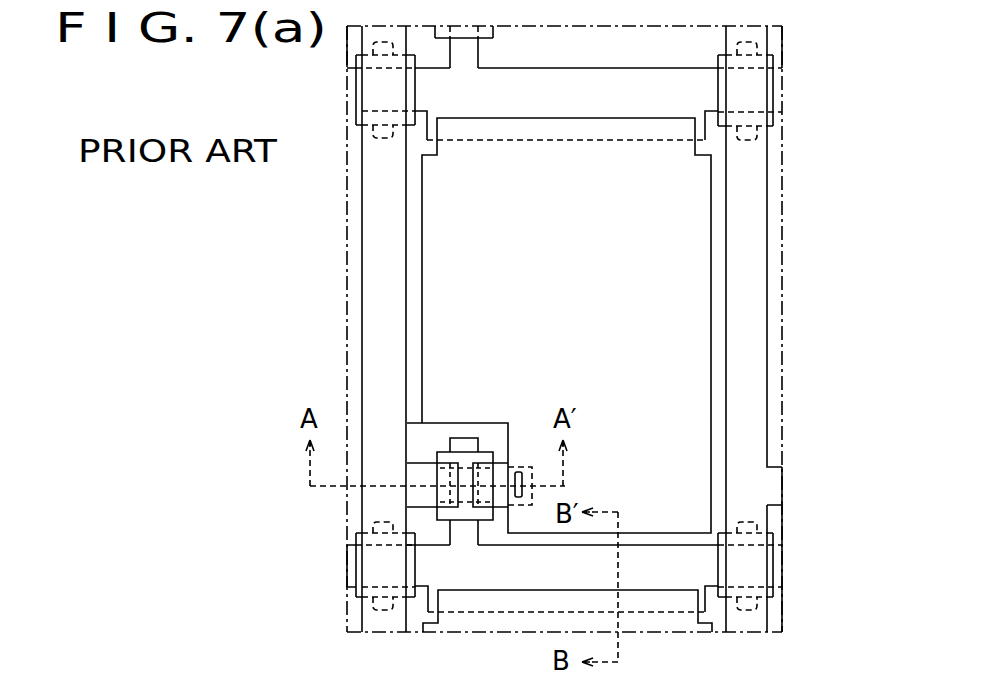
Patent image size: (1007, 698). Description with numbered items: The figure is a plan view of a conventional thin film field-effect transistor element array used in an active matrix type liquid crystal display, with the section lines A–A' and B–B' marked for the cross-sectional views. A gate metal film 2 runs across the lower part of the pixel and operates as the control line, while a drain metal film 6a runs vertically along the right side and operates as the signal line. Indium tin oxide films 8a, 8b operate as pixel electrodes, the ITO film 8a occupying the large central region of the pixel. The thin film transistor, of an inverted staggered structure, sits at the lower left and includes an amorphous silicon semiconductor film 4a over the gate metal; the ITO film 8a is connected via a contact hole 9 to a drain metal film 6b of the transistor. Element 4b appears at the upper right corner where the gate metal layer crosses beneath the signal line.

The gate metal film 2 is at (467, 577).
The amorphous silicon semiconductor film 4a is at (448, 440).
The gate-layer pad portion 4b is at (772, 120).
The drain metal film 6a is at (753, 398).
The drain metal film 6b is at (503, 465).
The indium tin oxide film 8a is at (693, 305).
The indium tin oxide film 8b is at (512, 618).
The contact hole 9 is at (523, 468).